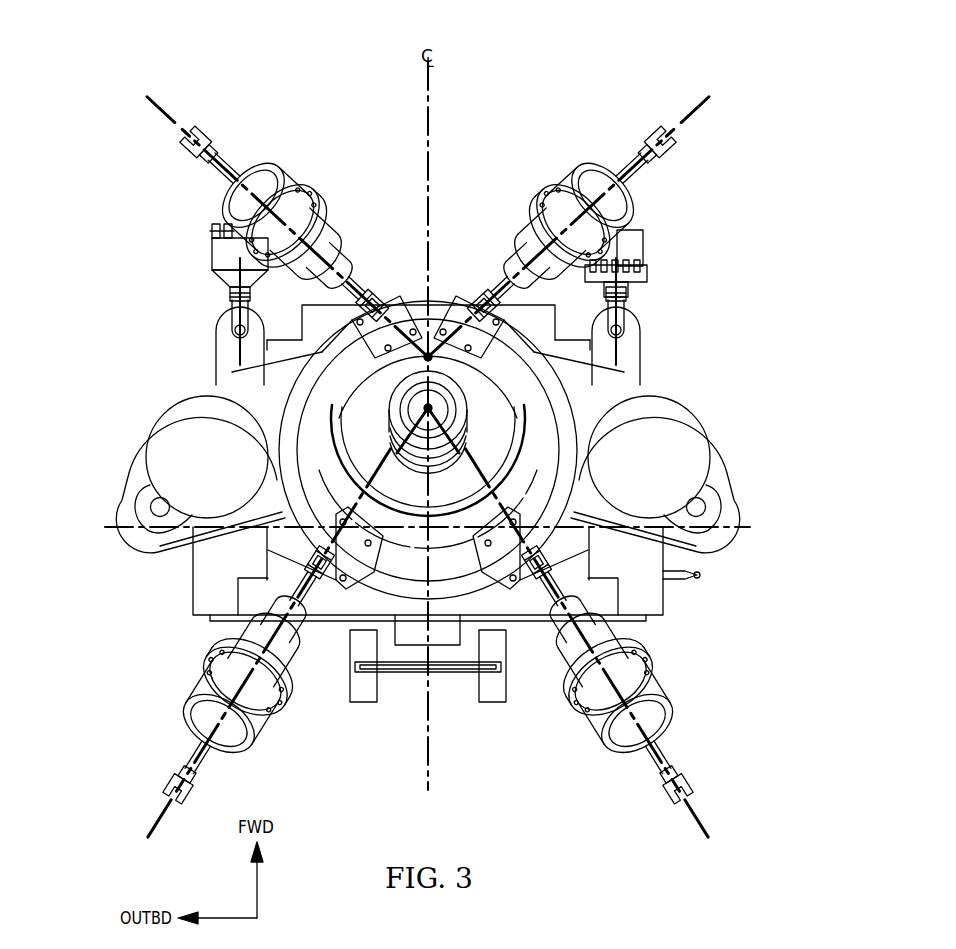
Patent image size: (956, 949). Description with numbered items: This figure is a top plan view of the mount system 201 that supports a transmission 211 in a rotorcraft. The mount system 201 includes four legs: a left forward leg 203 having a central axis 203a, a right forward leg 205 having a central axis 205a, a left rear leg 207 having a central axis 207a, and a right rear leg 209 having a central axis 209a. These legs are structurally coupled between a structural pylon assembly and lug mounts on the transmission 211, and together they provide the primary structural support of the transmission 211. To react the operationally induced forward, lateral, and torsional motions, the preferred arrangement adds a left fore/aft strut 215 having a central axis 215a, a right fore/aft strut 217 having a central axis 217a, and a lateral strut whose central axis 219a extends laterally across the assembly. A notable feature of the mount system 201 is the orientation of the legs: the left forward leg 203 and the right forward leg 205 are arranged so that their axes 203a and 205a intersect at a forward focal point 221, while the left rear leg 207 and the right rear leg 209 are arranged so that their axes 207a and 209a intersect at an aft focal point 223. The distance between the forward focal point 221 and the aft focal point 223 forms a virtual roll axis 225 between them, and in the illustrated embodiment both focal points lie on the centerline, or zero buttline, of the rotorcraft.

The mount system 201 is at (297, 53).
The left forward leg 203 is at (305, 188).
The central axis 203a is at (148, 103).
The right forward leg 205 is at (551, 188).
The central axis 205a is at (708, 103).
The left rear leg 207 is at (286, 712).
The central axis 207a is at (152, 832).
The right rear leg 209 is at (570, 712).
The central axis 209a is at (704, 832).
The transmission 211 is at (176, 385).
The left fore/aft strut 215 is at (210, 255).
The central axis 215a is at (222, 282).
The right fore/aft strut 217 is at (645, 252).
The central axis 217a is at (628, 296).
The central axis 219a is at (706, 567).
The forward focal point 221 is at (376, 380).
The aft focal point 223 is at (425, 412).
The virtual roll axis 225 is at (438, 373).